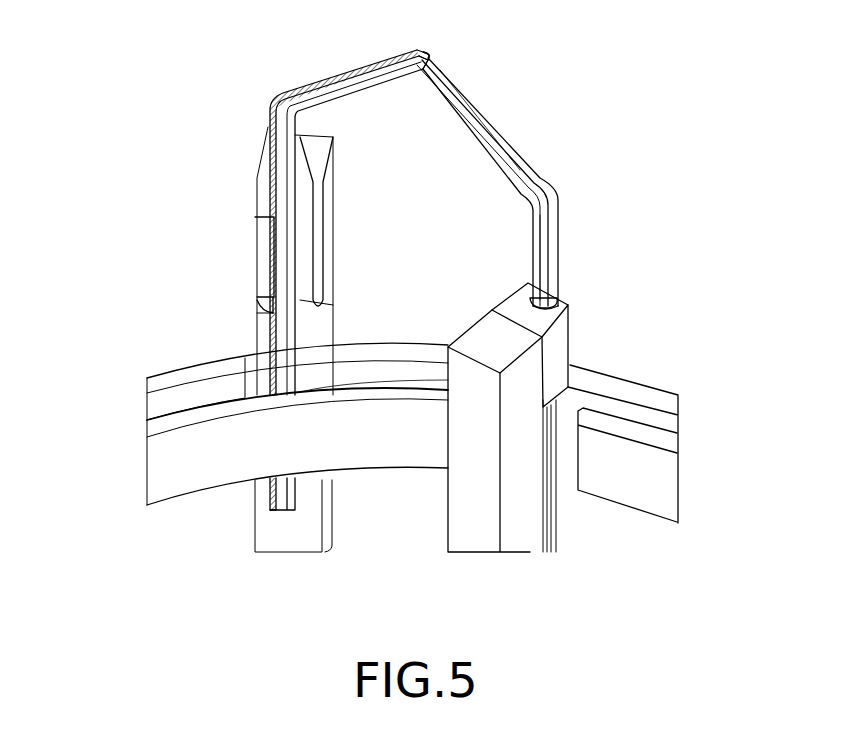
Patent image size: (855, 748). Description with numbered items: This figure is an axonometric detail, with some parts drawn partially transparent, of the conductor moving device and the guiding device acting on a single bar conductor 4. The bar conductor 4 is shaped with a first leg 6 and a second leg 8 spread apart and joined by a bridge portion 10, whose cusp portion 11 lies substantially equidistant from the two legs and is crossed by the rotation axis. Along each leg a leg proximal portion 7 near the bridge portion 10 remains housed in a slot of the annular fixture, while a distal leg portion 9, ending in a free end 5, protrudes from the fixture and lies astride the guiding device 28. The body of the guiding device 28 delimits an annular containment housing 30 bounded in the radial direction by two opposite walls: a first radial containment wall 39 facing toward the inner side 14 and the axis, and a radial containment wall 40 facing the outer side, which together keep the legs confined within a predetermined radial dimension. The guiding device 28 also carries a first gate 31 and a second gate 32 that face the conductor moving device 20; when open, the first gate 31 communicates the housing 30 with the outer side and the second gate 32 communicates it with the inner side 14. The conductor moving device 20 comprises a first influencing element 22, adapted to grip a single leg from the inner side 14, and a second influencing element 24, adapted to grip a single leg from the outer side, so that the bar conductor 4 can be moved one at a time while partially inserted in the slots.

The bar conductor 4 is at (542, 172).
The free end 5 is at (282, 520).
The first leg 6 is at (278, 313).
The leg proximal portion 7 is at (253, 217).
The second leg 8 is at (542, 275).
The distal leg portion 9 is at (275, 490).
The bridge portion 10 is at (492, 115).
The cusp portion 11 is at (430, 45).
The inner side 14 is at (397, 432).
The conductor moving device 20 is at (468, 513).
The first influencing element 22 is at (558, 338).
The second influencing element 24 is at (250, 180).
The guiding device 28 is at (642, 400).
The annular containment housing 30 is at (203, 397).
The first gate 31 is at (240, 353).
The second gate 32 is at (563, 447).
The first radial containment wall 39 is at (178, 400).
The radial containment wall 40 is at (637, 426).